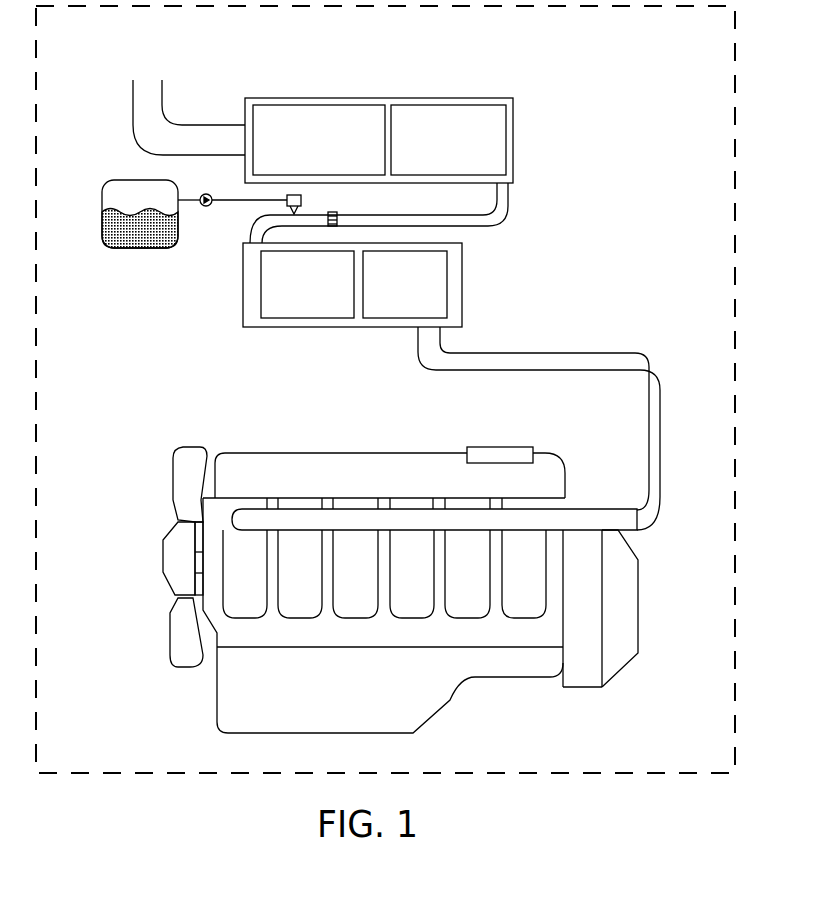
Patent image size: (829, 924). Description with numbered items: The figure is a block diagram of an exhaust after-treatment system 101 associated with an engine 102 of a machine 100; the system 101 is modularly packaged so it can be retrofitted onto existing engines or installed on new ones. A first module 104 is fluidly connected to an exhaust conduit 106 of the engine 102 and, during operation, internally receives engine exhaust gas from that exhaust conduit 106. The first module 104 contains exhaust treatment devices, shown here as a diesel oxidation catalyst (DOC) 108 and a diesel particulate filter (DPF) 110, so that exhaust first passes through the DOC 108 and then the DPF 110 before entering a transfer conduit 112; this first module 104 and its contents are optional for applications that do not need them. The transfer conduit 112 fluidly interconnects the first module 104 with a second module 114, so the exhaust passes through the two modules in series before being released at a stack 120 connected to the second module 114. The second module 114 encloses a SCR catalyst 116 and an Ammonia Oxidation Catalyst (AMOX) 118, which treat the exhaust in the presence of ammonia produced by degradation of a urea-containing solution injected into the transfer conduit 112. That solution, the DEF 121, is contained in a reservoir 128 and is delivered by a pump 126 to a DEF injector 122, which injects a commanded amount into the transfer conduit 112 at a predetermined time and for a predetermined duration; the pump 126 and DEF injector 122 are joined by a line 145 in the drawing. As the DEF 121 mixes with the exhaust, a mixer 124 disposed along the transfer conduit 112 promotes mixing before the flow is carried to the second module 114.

The machine 100 is at (705, 757).
The exhaust after-treatment system 101 is at (433, 107).
The engine 102 is at (653, 599).
The first module 104 is at (390, 308).
The exhaust conduit 106 is at (578, 353).
The diesel oxidation catalyst (DOC) 108 is at (418, 285).
The diesel particulate filter (DPF) 110 is at (302, 292).
The transfer conduit 112 is at (502, 208).
The second module 114 is at (392, 100).
The SCR catalyst 116 is at (435, 145).
The Ammonia Oxidation Catalyst (AMOX) 118 is at (302, 117).
The stack 120 is at (165, 137).
The DEF 121 is at (140, 227).
The DEF injector 122 is at (290, 209).
The mixer 124 is at (333, 213).
The pump 126 is at (207, 207).
The reservoir 128 is at (110, 197).
The reductant supply line 145 is at (227, 197).